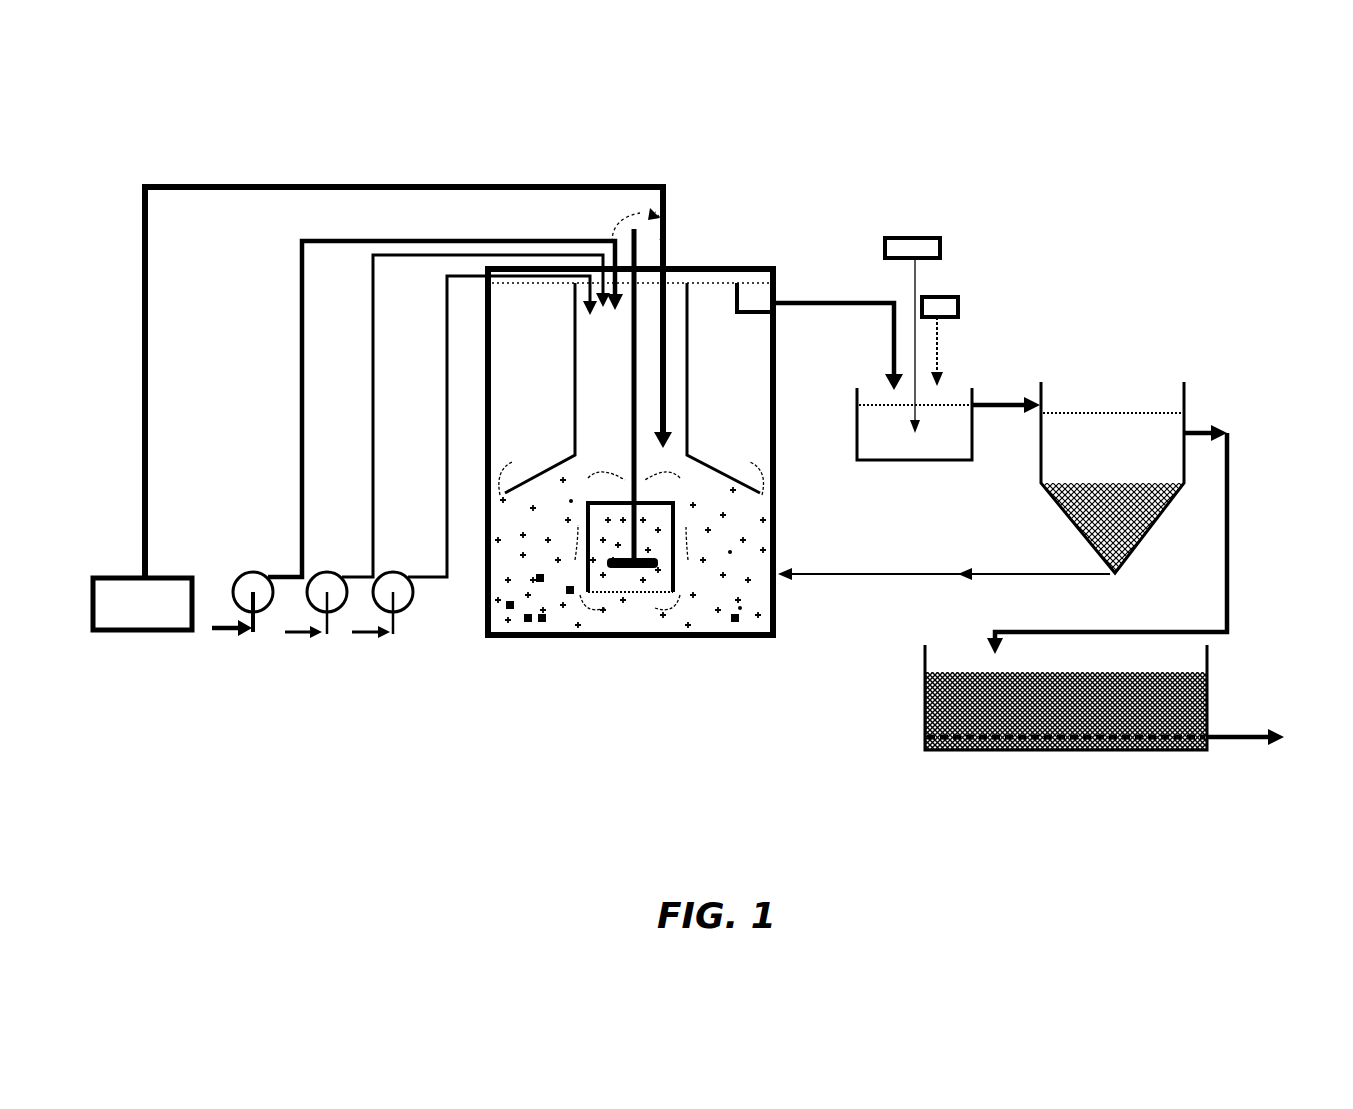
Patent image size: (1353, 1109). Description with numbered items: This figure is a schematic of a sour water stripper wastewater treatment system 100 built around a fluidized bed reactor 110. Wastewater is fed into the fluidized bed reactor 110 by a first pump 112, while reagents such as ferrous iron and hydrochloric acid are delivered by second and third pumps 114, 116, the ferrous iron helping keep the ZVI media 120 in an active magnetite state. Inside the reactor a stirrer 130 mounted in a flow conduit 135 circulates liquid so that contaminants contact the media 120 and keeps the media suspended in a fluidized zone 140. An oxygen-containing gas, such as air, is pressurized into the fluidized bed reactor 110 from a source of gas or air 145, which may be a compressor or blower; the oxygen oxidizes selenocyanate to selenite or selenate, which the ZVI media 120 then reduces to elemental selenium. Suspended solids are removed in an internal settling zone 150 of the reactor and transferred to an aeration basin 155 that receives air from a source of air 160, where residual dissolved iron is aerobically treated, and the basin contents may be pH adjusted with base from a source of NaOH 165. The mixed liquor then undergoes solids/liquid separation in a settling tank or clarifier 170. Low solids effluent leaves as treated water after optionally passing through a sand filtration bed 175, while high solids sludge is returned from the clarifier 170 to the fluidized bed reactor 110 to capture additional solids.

The sour water treatment system 100 is at (1008, 216).
The fluidized bed reactor 110 is at (626, 668).
The first pump 112 is at (417, 458).
The second pump 114 is at (446, 465).
The third pump 116 is at (474, 475).
The ZVI media 120 is at (527, 592).
The stirrer 130 is at (648, 575).
The flow conduit 135 is at (672, 520).
The fluidized zone 140 is at (713, 598).
The source of gas or air 145 is at (166, 621).
The internal settling zone 150 is at (555, 392).
The aeration basin 155 is at (905, 462).
The source of air 160 is at (904, 238).
The source of NaOH 165 is at (944, 298).
The settling tank or clarifier 170 is at (1184, 400).
The sand filtration bed 175 is at (1072, 750).